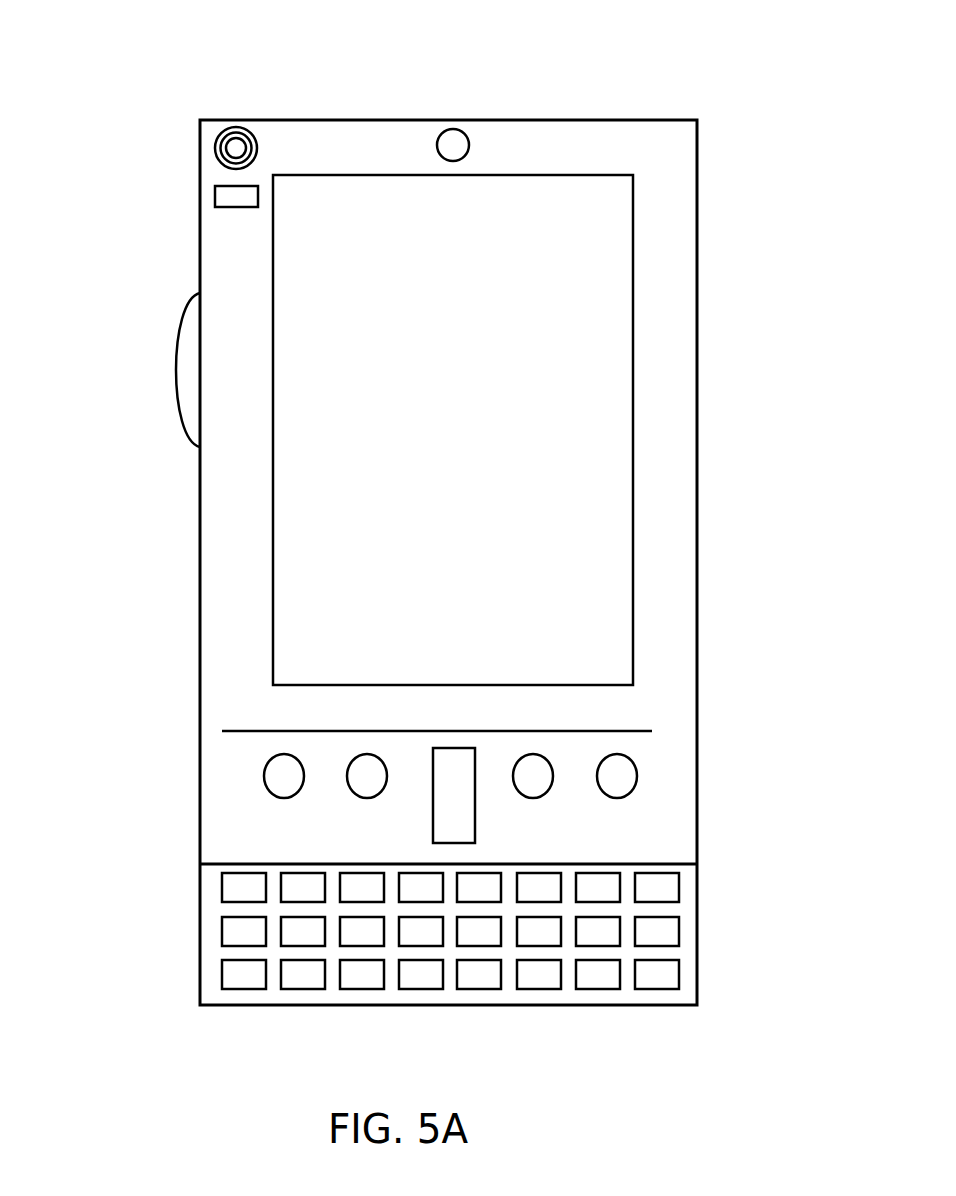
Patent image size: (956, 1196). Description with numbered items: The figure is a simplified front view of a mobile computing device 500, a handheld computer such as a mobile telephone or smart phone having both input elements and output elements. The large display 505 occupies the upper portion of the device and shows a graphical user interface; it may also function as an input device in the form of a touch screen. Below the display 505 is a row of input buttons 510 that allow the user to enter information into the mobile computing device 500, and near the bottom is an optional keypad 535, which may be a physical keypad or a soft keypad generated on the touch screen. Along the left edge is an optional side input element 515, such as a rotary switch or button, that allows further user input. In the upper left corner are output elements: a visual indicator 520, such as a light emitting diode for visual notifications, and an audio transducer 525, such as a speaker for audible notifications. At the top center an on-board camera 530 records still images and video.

The mobile computing device 500 is at (687, 138).
The display 505 is at (385, 599).
The input buttons 510 is at (450, 803).
The side input element 515 is at (192, 369).
The visual indicator 520 is at (218, 202).
The audio transducer 525 is at (216, 148).
The on-board camera 530 is at (463, 143).
The keypad 535 is at (210, 980).